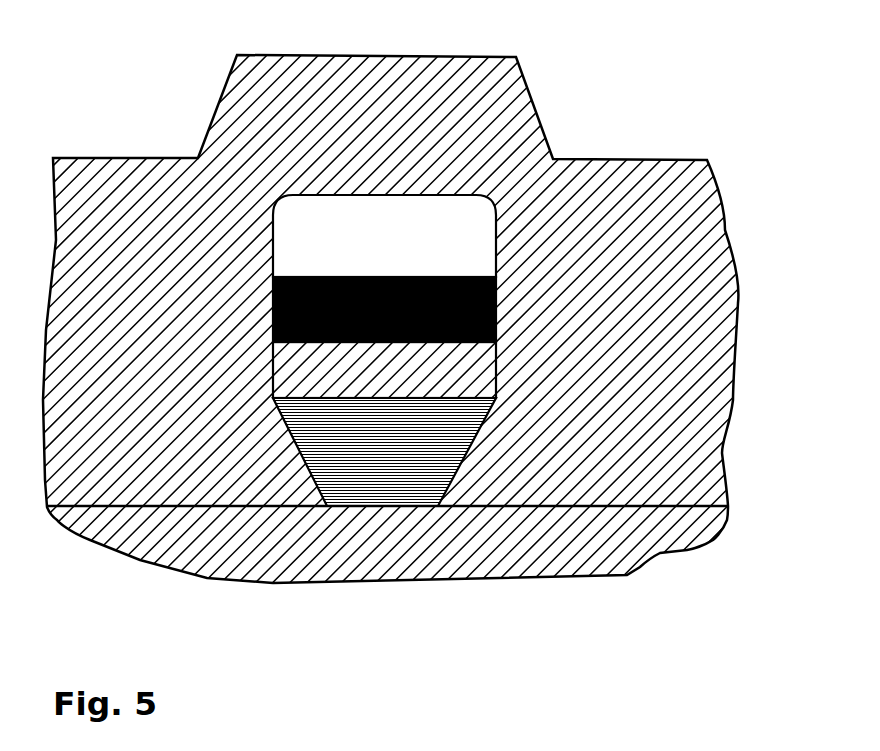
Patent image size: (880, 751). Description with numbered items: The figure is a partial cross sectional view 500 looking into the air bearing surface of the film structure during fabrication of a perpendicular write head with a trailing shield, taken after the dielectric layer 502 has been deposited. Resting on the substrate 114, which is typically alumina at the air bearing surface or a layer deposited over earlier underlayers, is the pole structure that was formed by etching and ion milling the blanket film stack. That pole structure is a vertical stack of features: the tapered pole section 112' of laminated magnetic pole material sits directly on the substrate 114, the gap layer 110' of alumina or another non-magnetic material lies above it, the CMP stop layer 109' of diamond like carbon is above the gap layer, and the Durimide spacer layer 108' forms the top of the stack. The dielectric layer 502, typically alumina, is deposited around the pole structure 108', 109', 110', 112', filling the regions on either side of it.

The partial cross sectional view 500 is at (618, 102).
The dielectric layer 502 is at (645, 309).
The spacer layer feature 108' is at (384, 236).
The CMP stop layer feature 109' is at (384, 309).
The gap layer feature 110' is at (384, 370).
The tapered pole section 112' is at (384, 452).
The substrate 114 is at (373, 557).